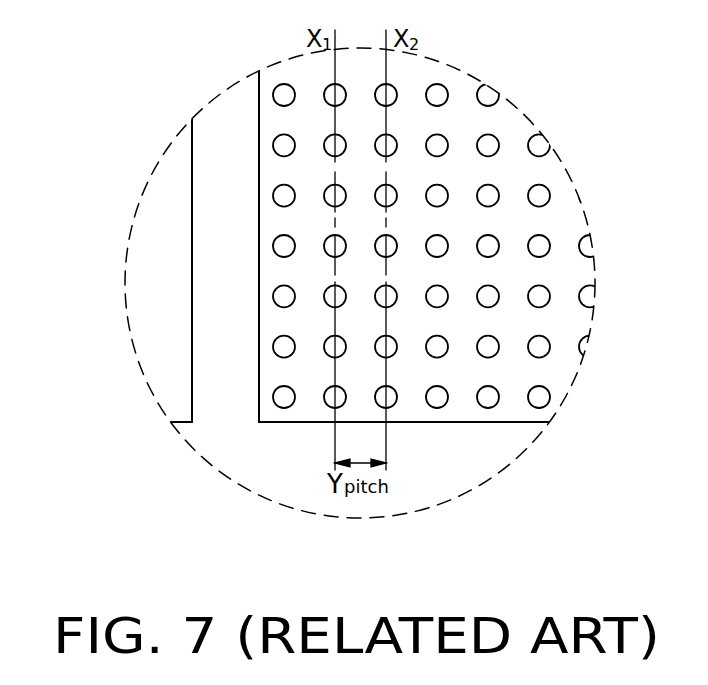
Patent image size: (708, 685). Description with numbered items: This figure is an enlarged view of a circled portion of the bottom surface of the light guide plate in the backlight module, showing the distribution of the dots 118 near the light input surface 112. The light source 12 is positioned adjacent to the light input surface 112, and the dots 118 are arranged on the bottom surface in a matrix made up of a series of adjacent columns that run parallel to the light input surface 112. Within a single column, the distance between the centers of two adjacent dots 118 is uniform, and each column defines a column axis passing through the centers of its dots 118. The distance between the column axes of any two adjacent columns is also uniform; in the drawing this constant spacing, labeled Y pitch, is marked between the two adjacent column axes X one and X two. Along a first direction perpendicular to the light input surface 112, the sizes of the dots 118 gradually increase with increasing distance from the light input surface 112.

The light source 12 is at (160, 236).
The light input surface 112 is at (259, 134).
The dots 118 is at (487, 146).